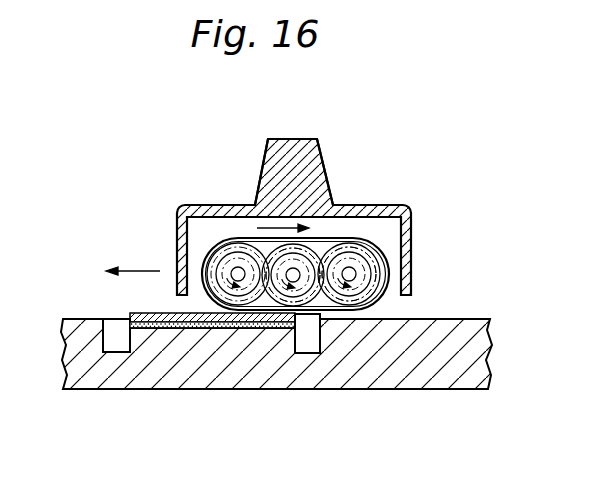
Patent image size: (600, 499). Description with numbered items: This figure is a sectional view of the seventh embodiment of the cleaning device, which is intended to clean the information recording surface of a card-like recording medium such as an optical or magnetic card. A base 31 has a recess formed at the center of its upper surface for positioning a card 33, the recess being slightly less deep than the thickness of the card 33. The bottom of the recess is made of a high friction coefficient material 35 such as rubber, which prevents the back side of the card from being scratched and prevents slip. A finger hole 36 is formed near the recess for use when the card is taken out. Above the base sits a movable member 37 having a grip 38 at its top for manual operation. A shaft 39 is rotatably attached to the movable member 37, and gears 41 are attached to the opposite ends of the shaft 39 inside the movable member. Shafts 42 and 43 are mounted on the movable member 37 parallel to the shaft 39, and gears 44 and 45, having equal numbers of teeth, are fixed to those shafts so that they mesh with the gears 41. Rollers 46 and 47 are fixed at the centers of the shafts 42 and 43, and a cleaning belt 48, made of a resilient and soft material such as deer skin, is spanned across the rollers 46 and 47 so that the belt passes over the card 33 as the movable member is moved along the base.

The base 31 is at (473, 335).
The card 33 is at (150, 313).
The high friction coefficient material 35 is at (150, 333).
The finger hole 36 is at (115, 327).
The movable member 37 is at (378, 232).
The grip 38 is at (280, 163).
The shaft 39 is at (303, 293).
The gears 41 is at (292, 276).
The shaft 42 is at (195, 332).
The shaft 43 is at (350, 274).
The gear 44 is at (222, 258).
The gear 45 is at (372, 246).
The roller 46 is at (228, 232).
The roller 47 is at (382, 212).
The cleaning belt 48 is at (340, 233).